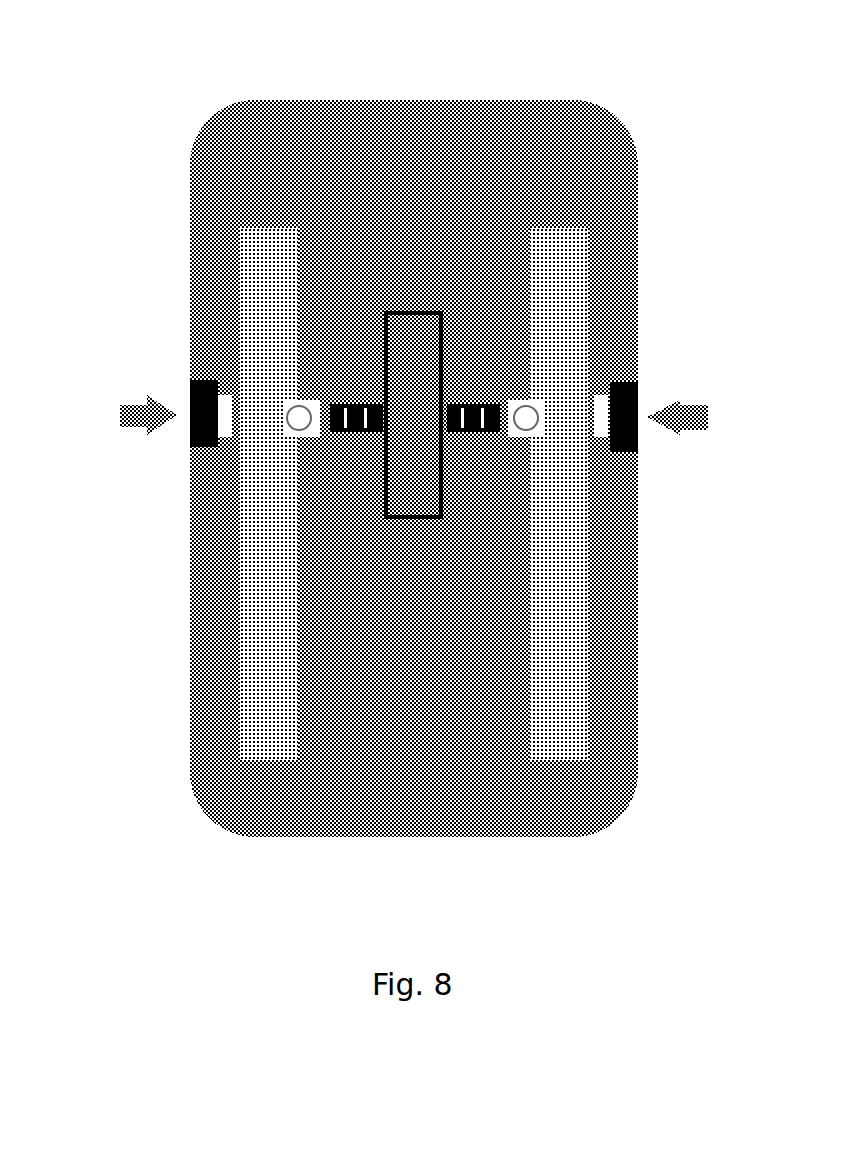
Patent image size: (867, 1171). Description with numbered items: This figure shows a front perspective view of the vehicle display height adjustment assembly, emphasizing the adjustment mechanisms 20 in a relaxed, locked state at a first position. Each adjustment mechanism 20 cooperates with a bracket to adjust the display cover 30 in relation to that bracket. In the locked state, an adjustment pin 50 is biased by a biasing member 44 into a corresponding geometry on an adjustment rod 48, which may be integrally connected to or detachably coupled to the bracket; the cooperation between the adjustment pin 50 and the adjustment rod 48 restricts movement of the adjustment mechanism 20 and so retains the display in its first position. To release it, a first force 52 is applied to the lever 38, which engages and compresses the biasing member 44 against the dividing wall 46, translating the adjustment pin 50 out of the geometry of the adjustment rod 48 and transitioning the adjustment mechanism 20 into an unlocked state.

The adjustment mechanism 20 is at (374, 419).
The display cover 30 is at (220, 125).
The lever 38 is at (185, 413).
The biasing member 44 is at (477, 433).
The dividing wall 46 is at (422, 322).
The adjustment rod 48 is at (245, 250).
The adjustment pin 50 is at (520, 408).
The first force 52 is at (123, 427).